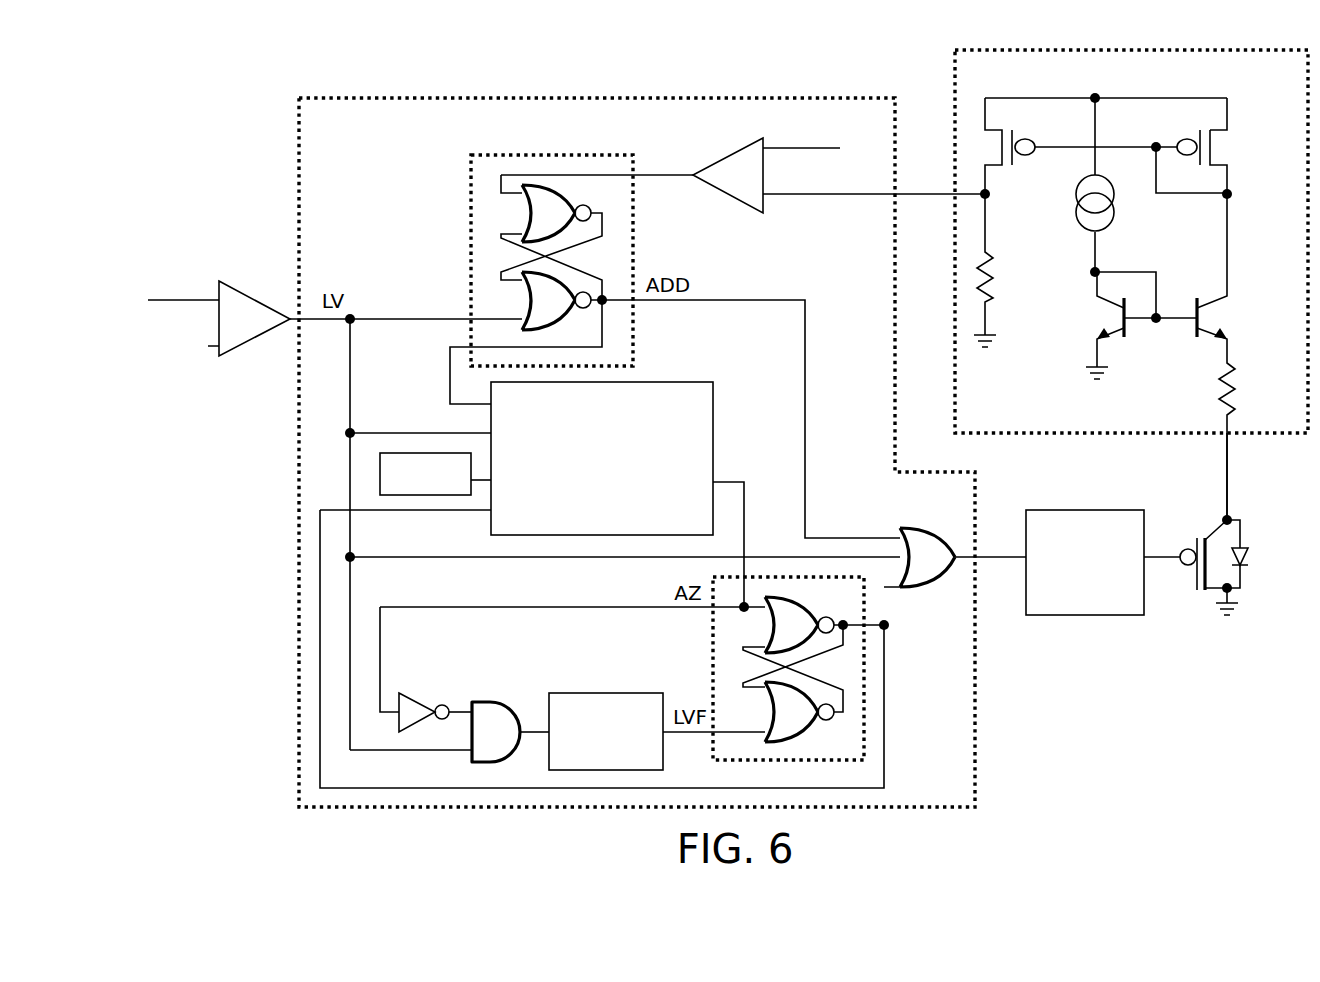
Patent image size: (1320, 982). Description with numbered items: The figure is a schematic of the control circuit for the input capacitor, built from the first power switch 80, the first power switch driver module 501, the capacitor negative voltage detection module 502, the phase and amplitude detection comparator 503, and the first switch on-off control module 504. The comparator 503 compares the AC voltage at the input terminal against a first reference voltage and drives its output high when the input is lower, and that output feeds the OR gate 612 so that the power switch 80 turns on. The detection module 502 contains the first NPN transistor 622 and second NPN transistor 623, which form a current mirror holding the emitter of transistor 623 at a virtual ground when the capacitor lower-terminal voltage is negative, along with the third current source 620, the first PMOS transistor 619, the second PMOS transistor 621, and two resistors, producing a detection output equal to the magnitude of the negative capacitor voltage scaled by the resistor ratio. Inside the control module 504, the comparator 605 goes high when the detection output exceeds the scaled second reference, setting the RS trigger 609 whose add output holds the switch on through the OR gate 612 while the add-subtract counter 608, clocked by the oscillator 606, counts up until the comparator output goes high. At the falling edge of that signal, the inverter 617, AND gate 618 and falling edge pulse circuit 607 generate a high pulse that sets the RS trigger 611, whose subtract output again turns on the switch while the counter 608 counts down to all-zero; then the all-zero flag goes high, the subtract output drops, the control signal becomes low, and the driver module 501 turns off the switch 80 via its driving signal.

The first power switch driver module 501 is at (1062, 616).
The capacitor negative voltage detection module 502 is at (1152, 48).
The comparator 503 is at (235, 270).
The first switch on-off control module 504 is at (533, 96).
The comparator 605 is at (732, 152).
The oscillator 606 is at (430, 452).
The falling edge pulse circuit 607 is at (620, 690).
The add-subtract counter 608 is at (690, 384).
The RS trigger 609 is at (470, 218).
The RS trigger 611 is at (712, 660).
The OR gate 612 is at (930, 524).
The inverter 617 is at (412, 698).
The AND gate 618 is at (492, 700).
The first PMOS transistor 619 is at (1014, 172).
The third current source 620 is at (1120, 195).
The second PMOS transistor 621 is at (1230, 148).
The first NPN transistor 622 is at (1092, 316).
The second NPN transistor 623 is at (1222, 314).
The first power switch 80 is at (1200, 600).